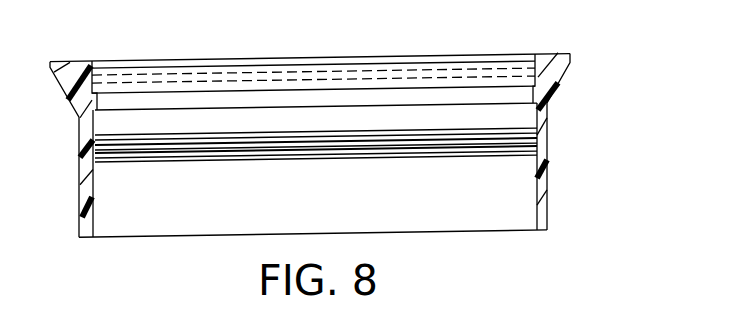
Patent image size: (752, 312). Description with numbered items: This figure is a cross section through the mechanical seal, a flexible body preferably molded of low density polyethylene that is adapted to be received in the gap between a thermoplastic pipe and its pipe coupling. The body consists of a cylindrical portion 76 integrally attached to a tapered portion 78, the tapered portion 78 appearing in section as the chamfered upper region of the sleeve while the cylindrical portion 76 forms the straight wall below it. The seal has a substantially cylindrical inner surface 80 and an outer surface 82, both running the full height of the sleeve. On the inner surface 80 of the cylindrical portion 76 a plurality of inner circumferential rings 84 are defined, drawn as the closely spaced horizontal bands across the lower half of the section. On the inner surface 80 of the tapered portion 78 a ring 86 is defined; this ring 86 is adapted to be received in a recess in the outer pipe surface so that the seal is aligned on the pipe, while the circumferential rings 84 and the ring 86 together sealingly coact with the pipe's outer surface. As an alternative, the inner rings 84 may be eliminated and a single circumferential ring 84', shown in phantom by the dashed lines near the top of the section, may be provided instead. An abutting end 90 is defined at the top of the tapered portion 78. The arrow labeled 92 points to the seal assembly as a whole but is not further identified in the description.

The cylindrical portion 76 is at (548, 180).
The tapered portion 78 is at (552, 85).
The inner surface 80 is at (93, 192).
The outer surface 82 is at (80, 238).
The inner circumferential rings 84 is at (316, 169).
The circumferential ring 84' is at (313, 50).
The ring 86 is at (362, 88).
The abutting end 90 is at (553, 50).
The cap assembly 92 is at (497, 35).